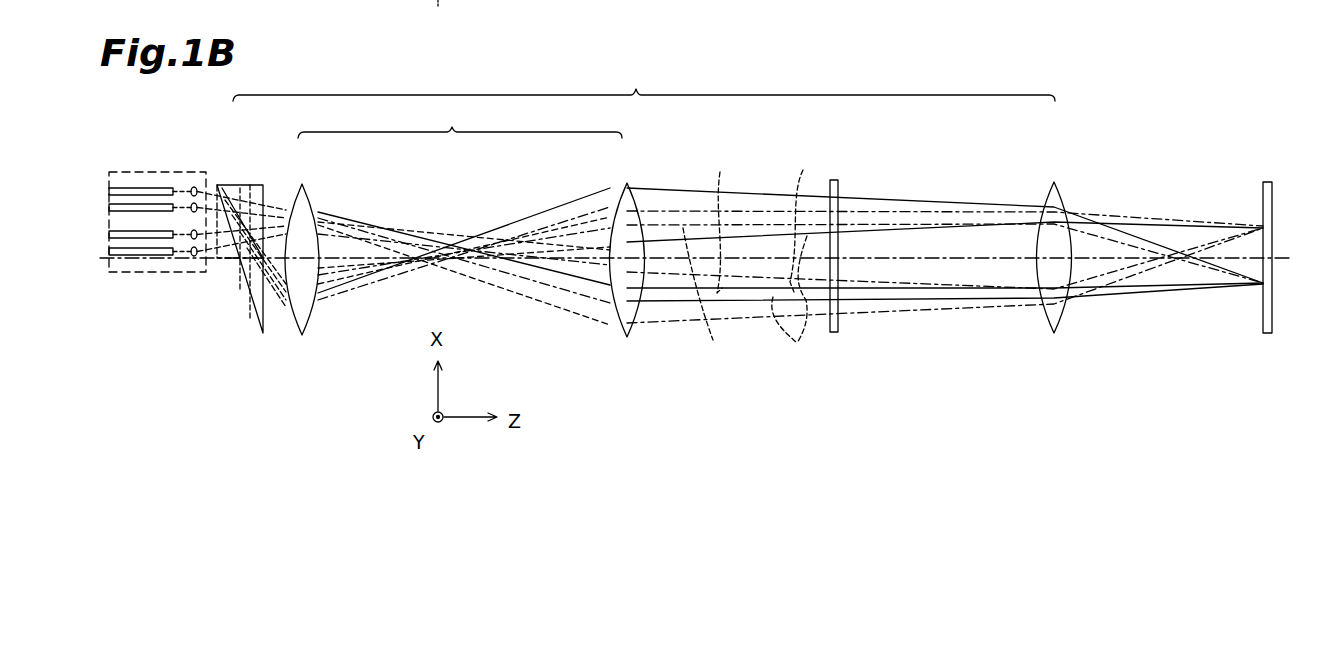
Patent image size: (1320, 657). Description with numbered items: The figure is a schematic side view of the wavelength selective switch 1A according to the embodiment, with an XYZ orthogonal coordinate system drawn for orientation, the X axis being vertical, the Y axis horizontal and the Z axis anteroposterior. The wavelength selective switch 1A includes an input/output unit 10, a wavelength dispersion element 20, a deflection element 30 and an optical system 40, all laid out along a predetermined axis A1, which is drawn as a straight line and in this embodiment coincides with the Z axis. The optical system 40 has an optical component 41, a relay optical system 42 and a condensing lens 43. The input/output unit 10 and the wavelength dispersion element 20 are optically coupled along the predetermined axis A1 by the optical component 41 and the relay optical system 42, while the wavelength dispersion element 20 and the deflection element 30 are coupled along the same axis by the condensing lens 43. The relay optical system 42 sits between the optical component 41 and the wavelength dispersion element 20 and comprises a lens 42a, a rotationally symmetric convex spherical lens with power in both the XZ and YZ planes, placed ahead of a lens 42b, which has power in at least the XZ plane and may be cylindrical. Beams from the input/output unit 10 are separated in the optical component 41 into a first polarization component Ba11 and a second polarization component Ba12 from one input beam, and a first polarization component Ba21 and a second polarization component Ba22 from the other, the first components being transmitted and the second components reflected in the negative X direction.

The wavelength selective switch 1A is at (1149, 178).
The input/output unit 10 is at (150, 274).
The wavelength dispersion element 20 is at (842, 332).
The deflection element 30 is at (1283, 201).
The optical system 40 is at (644, 81).
The optical component 41 is at (256, 175).
The relay optical system 42 is at (460, 121).
The lens 42a is at (320, 191).
The lens 42b is at (616, 196).
The condensing lens 43 is at (1053, 182).
The predetermined axis A1 is at (981, 258).
The first polarization component Ba11 is at (750, 196).
The second polarization component Ba12 is at (774, 206).
The first polarization component Ba21 is at (798, 338).
The second polarization component Ba22 is at (709, 336).